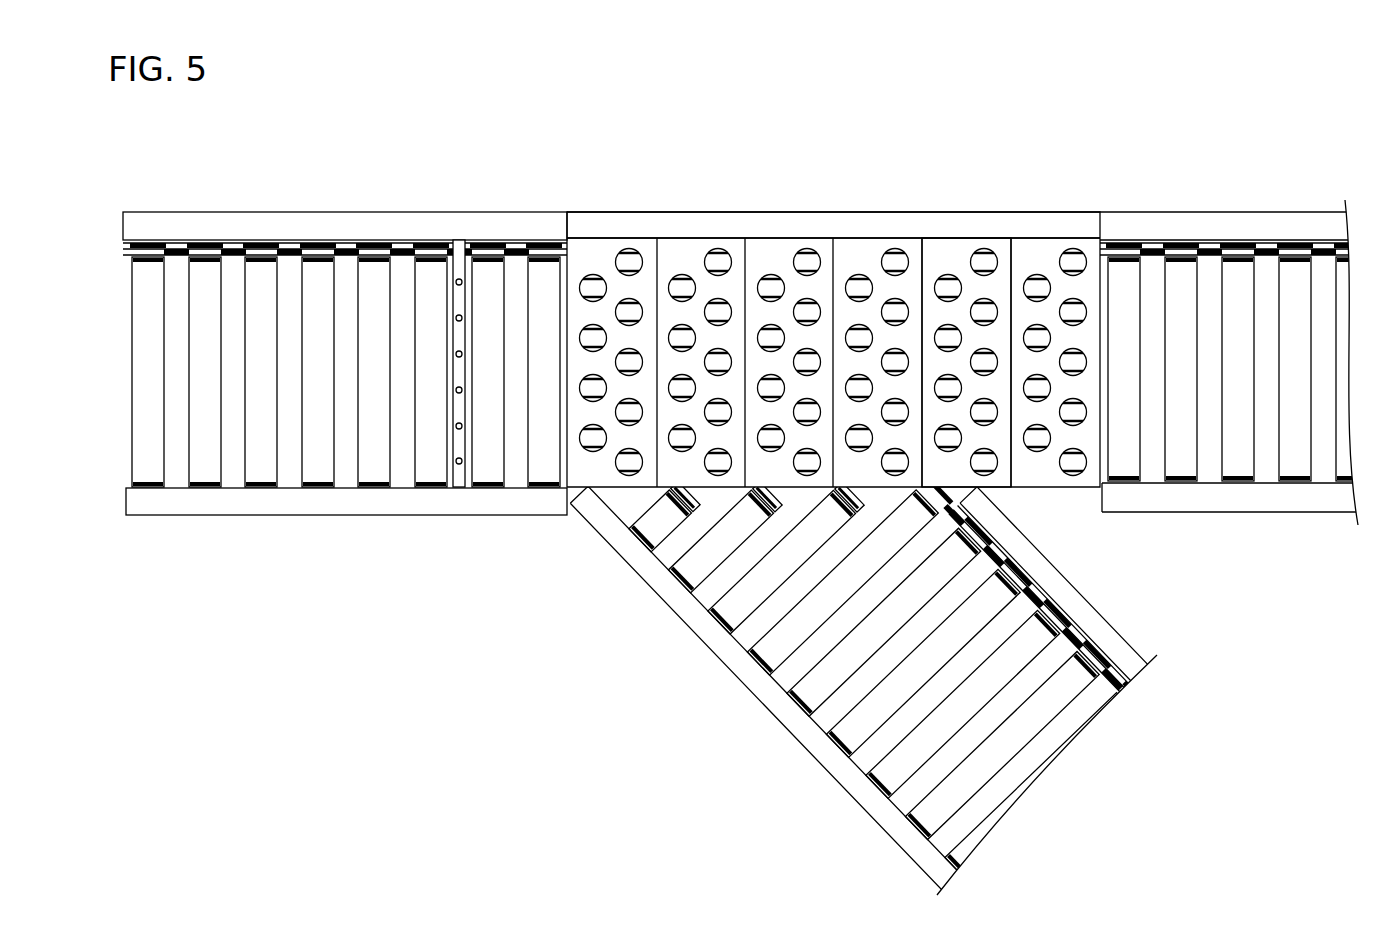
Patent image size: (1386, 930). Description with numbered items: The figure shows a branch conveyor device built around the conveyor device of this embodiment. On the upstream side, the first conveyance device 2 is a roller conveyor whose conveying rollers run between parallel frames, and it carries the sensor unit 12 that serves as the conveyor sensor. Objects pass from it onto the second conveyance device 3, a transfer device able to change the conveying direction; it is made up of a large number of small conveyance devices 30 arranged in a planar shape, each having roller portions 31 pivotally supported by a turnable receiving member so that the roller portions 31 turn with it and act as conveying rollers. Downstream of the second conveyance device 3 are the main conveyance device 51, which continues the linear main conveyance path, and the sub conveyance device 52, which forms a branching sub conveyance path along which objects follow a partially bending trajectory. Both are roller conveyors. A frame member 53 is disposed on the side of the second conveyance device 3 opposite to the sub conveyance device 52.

The first conveyance device 2 is at (345, 324).
The sensor unit 12 is at (460, 258).
The small conveyance device 30 is at (833, 313).
The roller portion 31 is at (797, 256).
The frame member 53 is at (880, 222).
The second conveyance device 3 is at (940, 248).
The main conveyance device 51 is at (1199, 187).
The sub conveyance device 52 is at (783, 782).